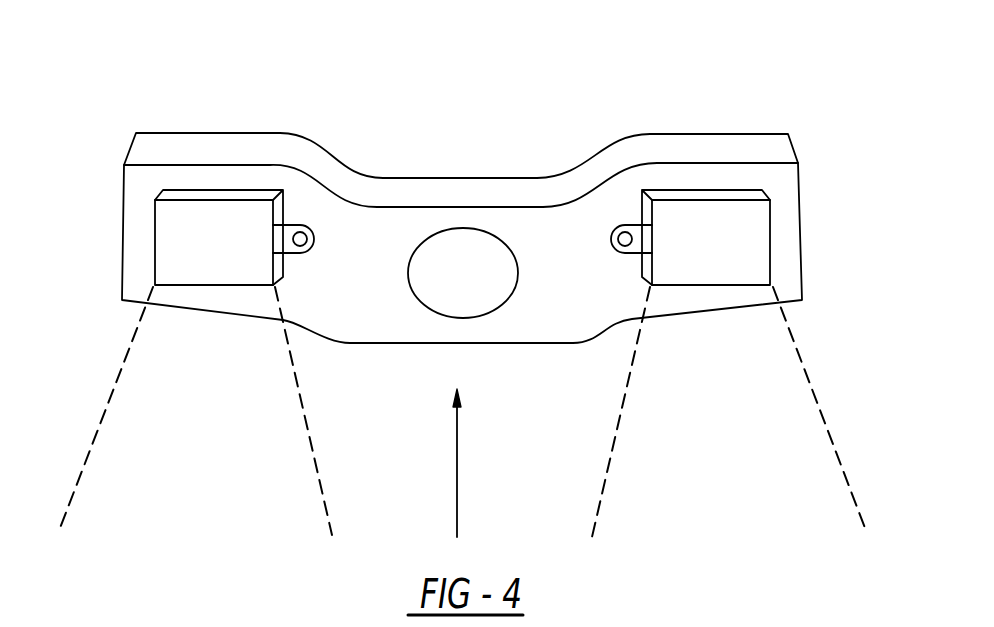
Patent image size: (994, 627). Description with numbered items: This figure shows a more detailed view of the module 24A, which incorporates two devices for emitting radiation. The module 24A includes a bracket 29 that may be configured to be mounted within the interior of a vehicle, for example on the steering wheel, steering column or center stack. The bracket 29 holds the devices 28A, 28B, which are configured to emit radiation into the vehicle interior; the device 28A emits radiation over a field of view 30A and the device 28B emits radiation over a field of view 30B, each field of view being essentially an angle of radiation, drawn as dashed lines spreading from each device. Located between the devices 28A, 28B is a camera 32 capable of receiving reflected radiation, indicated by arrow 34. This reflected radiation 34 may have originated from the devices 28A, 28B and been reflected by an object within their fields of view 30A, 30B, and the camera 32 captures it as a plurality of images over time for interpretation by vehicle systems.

The module 24A is at (270, 86).
The bracket 29 is at (403, 190).
The camera 32 is at (467, 258).
The device 28A is at (200, 237).
The device 28B is at (747, 238).
The field of view 30A is at (202, 418).
The field of view 30B is at (732, 435).
The reflected radiation 34 is at (457, 452).